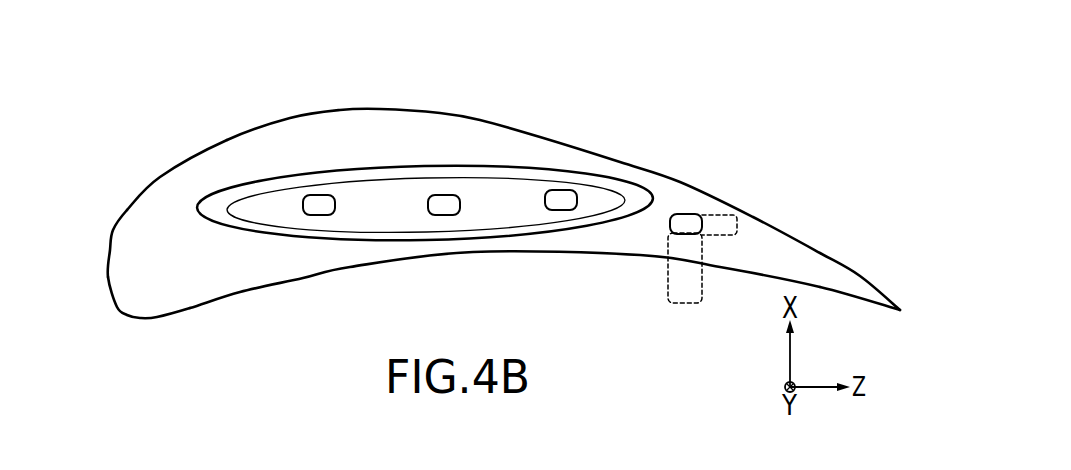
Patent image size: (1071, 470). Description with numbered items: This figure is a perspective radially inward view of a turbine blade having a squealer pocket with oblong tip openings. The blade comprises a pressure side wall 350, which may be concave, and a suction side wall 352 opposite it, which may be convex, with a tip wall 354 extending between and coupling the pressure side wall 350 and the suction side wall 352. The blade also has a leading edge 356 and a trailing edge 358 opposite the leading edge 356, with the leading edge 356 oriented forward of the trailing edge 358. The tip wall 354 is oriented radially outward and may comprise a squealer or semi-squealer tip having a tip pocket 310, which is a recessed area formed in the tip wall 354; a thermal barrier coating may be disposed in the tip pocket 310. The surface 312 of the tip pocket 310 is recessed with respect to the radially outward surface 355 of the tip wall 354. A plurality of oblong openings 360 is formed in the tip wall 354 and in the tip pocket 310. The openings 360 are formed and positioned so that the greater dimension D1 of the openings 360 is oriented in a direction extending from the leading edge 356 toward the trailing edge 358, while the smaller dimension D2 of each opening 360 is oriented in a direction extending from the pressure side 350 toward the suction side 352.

The tip pocket 310 is at (383, 190).
The surface of tip pocket 312 is at (514, 224).
The pressure side wall 350 is at (303, 280).
The suction side wall 352 is at (417, 111).
The tip wall 354 is at (178, 167).
The radially outward surface of tip wall 355 is at (185, 246).
The leading edge 356 is at (105, 265).
The trailing edge 358 is at (903, 310).
The oblong openings 360 is at (315, 190).
The greater dimension of openings D1 is at (685, 303).
The smaller dimension of opening D2 is at (737, 225).